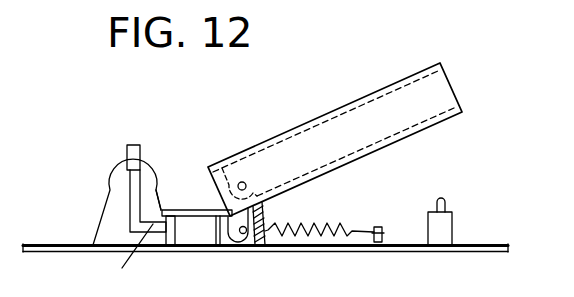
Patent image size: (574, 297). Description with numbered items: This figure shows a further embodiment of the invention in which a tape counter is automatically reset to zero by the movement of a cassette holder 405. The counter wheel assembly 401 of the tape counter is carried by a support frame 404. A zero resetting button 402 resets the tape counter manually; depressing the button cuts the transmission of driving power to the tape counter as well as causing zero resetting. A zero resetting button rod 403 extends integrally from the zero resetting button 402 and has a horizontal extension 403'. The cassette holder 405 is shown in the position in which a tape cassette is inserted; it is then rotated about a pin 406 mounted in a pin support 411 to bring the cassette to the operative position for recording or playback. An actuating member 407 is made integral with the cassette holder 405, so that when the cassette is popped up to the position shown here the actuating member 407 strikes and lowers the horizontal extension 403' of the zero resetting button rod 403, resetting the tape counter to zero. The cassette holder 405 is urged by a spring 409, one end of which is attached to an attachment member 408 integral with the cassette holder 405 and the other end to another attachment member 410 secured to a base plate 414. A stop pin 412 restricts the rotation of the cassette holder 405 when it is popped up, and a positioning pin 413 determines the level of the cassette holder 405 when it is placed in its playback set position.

The counter wheel assembly 401 is at (112, 170).
The zero resetting button 402 is at (130, 145).
The zero resetting button rod 403 is at (101, 201).
The horizontal extension 403' is at (100, 254).
The support frame 404 is at (152, 195).
The cassette holder 405 is at (367, 117).
The pin 406 is at (240, 177).
The actuating member 407 is at (214, 210).
The attachment member 408 is at (230, 251).
The spring 409 is at (313, 238).
The attachment member 410 is at (378, 243).
The pin support 411 is at (265, 212).
The stop pin 412 is at (258, 242).
The positioning pin 413 is at (447, 227).
The base plate 414 is at (490, 249).